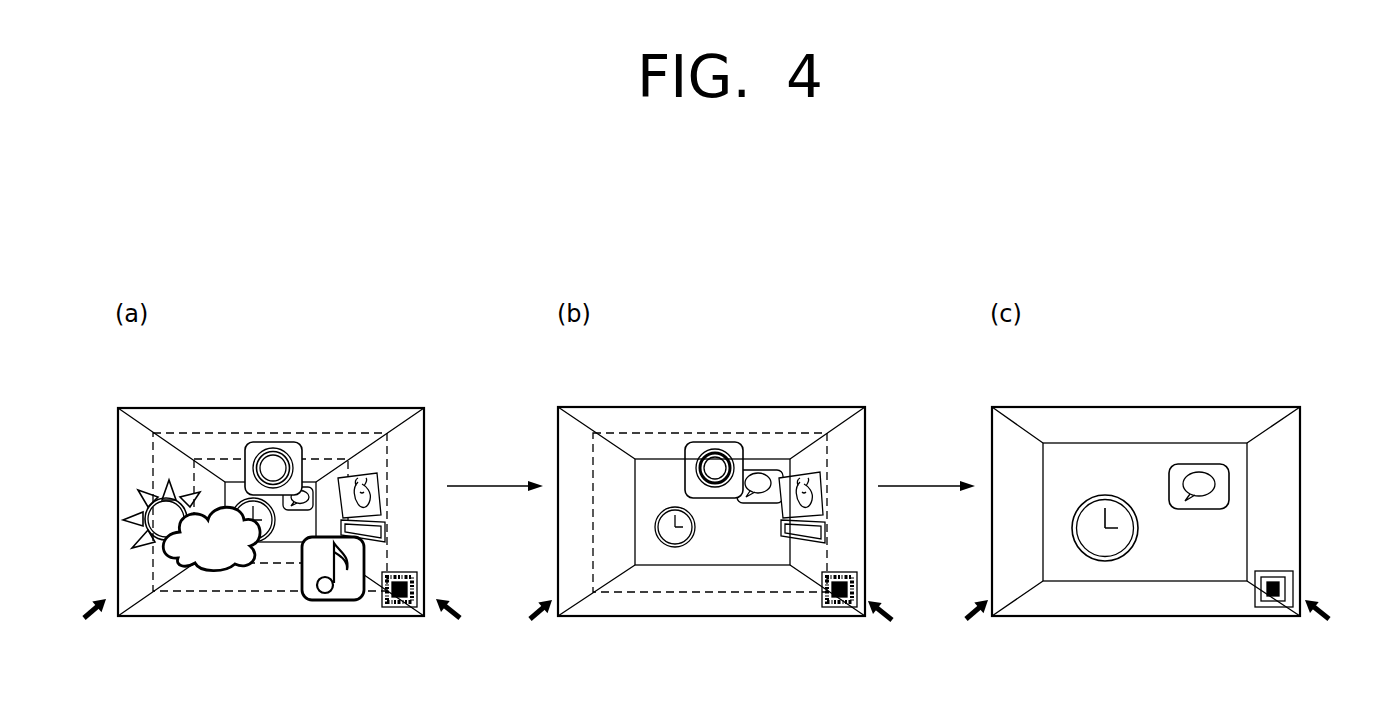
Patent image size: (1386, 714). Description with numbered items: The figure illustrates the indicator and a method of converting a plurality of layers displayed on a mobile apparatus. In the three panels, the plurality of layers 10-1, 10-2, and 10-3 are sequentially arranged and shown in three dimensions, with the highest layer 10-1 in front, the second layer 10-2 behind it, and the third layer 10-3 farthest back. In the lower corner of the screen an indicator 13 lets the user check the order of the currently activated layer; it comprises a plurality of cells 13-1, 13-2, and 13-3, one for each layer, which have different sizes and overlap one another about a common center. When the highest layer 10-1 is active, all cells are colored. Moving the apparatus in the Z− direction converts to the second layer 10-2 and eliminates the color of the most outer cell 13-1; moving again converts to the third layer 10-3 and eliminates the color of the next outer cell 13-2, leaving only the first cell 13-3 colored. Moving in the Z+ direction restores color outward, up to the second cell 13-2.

The highest layer 10-1 is at (176, 408).
The second layer 10-2 is at (222, 433).
The third layer 10-3 is at (322, 458).
The indicator 13 is at (884, 563).
The most outer cell 13-1 is at (399, 572).
The second cell 13-2 is at (405, 578).
The first cell 13-3 is at (407, 590).